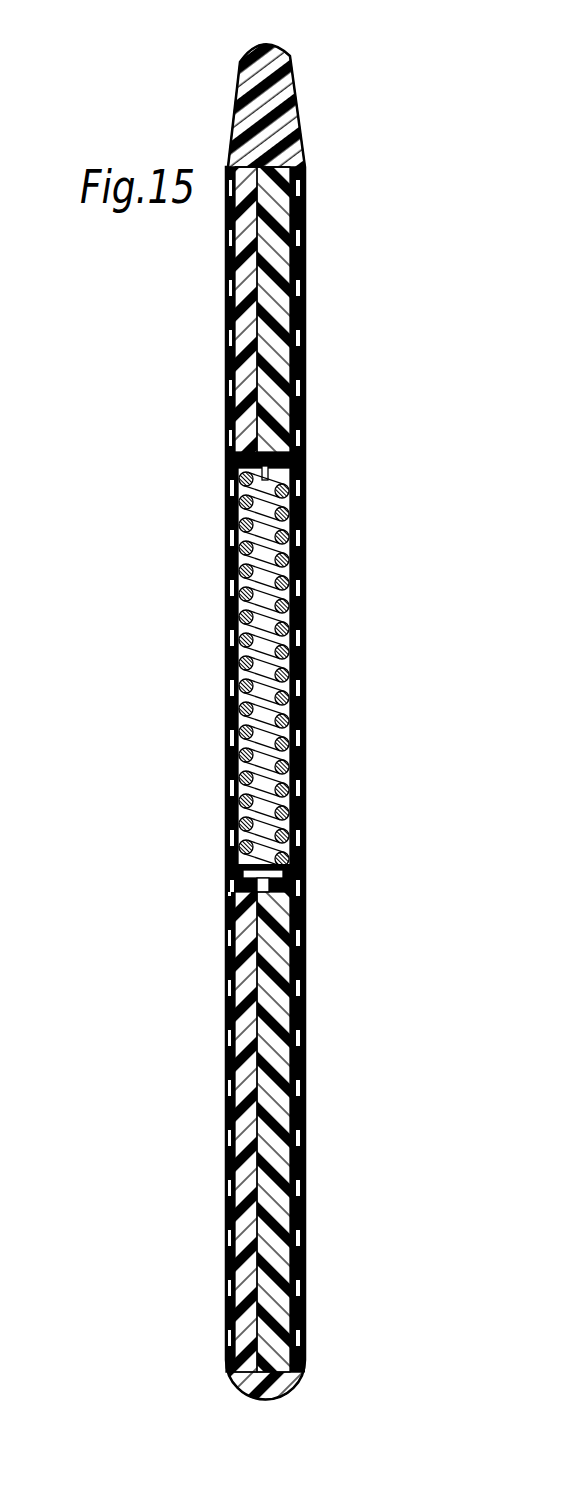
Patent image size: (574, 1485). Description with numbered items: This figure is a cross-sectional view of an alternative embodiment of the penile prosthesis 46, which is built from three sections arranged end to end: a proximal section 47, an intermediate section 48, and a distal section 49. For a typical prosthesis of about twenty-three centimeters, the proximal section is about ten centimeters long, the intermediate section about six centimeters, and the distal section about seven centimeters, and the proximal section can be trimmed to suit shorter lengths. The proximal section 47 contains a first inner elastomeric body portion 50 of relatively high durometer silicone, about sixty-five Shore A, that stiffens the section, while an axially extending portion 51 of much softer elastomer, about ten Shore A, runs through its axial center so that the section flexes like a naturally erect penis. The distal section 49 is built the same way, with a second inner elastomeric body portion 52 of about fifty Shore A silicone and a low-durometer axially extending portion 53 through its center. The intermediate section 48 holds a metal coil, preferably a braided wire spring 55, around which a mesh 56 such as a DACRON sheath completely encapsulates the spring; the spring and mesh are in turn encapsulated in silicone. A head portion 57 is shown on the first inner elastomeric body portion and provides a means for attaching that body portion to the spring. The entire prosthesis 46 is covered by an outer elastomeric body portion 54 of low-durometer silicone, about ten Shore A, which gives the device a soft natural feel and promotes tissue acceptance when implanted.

The penile prosthesis 46 is at (222, 1042).
The proximal section 47 is at (336, 897).
The intermediate section 48 is at (336, 462).
The distal section 49 is at (336, 40).
The first inner elastomeric body portion 50 is at (245, 1170).
The axially extending portion 51 is at (258, 1232).
The second inner elastomeric body portion 52 is at (247, 287).
The axially extending portion 53 is at (248, 350).
The outer elastomeric body portion 54 is at (230, 900).
The braided wire spring 55 is at (242, 728).
The mesh 56 is at (232, 672).
The head portion 57 is at (236, 862).